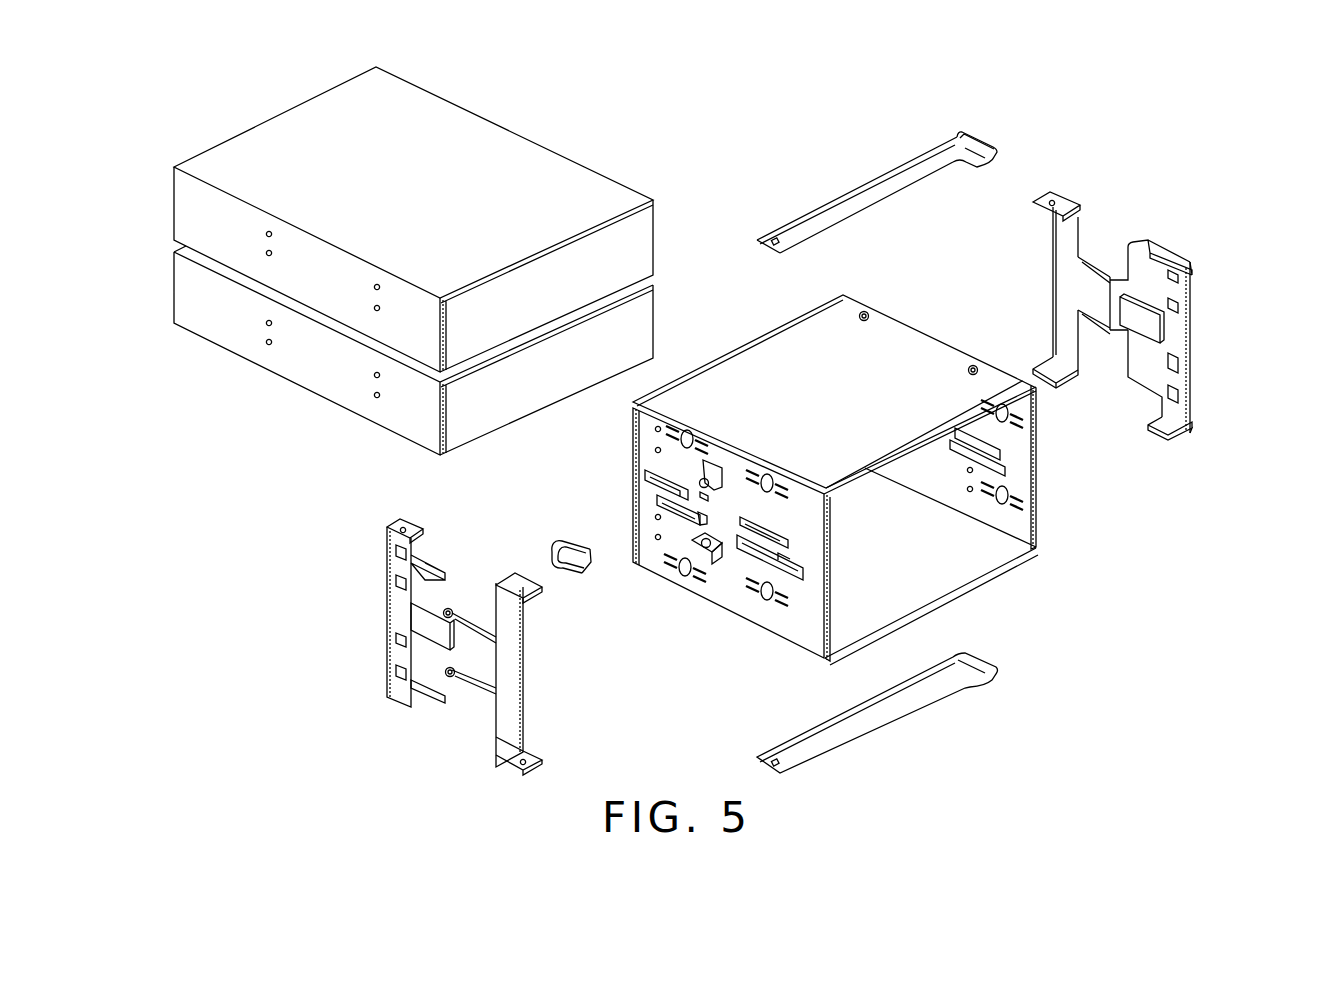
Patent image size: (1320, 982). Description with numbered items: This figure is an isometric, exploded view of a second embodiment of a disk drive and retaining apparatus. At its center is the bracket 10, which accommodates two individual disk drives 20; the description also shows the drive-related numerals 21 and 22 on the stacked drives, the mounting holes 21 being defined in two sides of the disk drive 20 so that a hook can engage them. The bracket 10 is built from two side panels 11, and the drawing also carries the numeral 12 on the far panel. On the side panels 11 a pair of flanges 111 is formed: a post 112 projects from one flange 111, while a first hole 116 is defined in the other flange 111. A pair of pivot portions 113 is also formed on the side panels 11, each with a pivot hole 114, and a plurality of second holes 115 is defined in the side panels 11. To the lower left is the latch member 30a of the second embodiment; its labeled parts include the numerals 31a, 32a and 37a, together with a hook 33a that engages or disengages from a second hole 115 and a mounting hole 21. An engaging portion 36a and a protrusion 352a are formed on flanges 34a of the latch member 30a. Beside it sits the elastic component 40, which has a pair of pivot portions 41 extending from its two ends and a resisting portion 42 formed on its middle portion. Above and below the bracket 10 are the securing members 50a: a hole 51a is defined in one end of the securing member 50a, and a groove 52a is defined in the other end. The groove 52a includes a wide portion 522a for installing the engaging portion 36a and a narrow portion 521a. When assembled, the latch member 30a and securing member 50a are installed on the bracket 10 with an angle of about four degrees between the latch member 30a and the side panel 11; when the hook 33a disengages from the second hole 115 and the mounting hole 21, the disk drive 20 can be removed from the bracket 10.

The bracket 10 is at (1050, 530).
The side panel 11 is at (798, 617).
The second side wall 12 is at (1017, 453).
The disk drive 20 is at (526, 170).
The mounting hole 21 is at (269, 253).
The second data storage device 22 is at (377, 395).
The latch member 30a is at (373, 561).
The bracket main plate 31a is at (440, 660).
The rivet 32a is at (450, 677).
The hook 33a is at (403, 637).
The flange 34a is at (527, 752).
The engaging portion 36a is at (403, 527).
The rivet 37a is at (446, 612).
The elastic component 40 is at (570, 574).
The pivot portion 41 is at (590, 570).
The resisting portion 42 is at (556, 547).
The securing member 50a is at (888, 157).
The hole 51a is at (770, 240).
The groove 52a is at (1100, 73).
The flange 111 is at (721, 558).
The post 112 is at (708, 557).
The pivot portion 113 is at (696, 519).
The pivot hole 114 is at (657, 500).
The second hole 115 is at (654, 428).
The first hole 116 is at (697, 480).
The protrusion 352a is at (493, 583).
The narrow portion 521a is at (978, 150).
The wide portion 522a is at (960, 138).